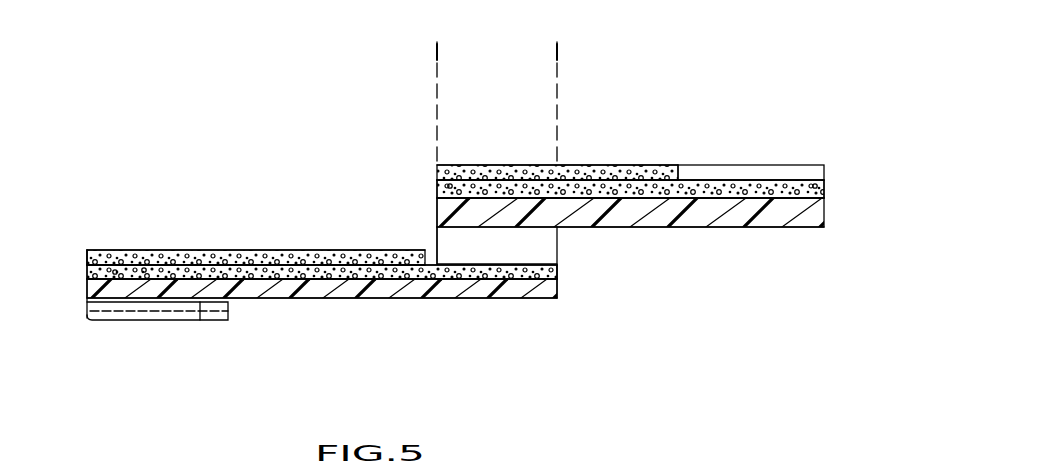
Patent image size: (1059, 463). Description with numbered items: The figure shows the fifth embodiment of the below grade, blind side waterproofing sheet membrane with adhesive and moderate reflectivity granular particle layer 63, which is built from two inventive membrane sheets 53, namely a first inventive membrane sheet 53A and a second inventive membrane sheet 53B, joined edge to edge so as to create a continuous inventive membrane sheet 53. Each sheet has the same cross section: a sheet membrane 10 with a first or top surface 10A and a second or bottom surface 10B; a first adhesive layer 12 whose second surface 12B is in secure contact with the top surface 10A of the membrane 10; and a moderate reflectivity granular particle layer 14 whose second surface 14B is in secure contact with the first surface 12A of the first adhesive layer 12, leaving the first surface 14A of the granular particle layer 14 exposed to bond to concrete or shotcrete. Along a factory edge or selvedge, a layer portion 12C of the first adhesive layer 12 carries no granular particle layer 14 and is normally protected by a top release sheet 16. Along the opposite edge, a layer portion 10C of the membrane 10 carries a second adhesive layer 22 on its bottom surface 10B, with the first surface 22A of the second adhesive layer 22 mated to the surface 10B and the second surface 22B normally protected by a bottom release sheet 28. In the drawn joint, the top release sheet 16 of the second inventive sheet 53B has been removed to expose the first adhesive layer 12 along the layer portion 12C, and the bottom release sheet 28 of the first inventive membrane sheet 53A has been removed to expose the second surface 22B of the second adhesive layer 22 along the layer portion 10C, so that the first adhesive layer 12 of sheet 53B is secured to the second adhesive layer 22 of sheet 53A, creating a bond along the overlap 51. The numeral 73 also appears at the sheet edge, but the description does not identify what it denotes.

The sheet membrane 10 is at (447, 300).
The first surface of the sheet membrane 10A is at (408, 299).
The second surface of the sheet membrane 10B is at (352, 300).
The layer portion of the membrane 10C is at (200, 321).
The first adhesive layer 12 is at (558, 272).
The first surface of the first adhesive layer 12A is at (538, 278).
The second surface of the first adhesive layer 12B is at (510, 280).
The layer portion of the first adhesive layer 12C is at (492, 270).
The moderate reflectivity granular particle layer 14 is at (165, 251).
The first surface of the granular particle layer 14A is at (218, 251).
The second surface of the granular particle layer 14B is at (258, 251).
The top release sheet 16 is at (708, 164).
The second adhesive layer 22 is at (548, 248).
The first surface of the second adhesive layer 22A is at (103, 270).
The second surface of the second adhesive layer 22B is at (110, 312).
The bottom release sheet 28 is at (229, 320).
The overlap 51 is at (557, 52).
The inventive membrane sheet 53 is at (115, 272).
The first inventive membrane sheet 53A is at (818, 186).
The second inventive membrane sheet 53B is at (144, 268).
The waterproofing sheet membrane with adhesive and moderate reflectivity granular pa 63 is at (672, 71).
The assembly (adjacent figure) 73 is at (700, 462).